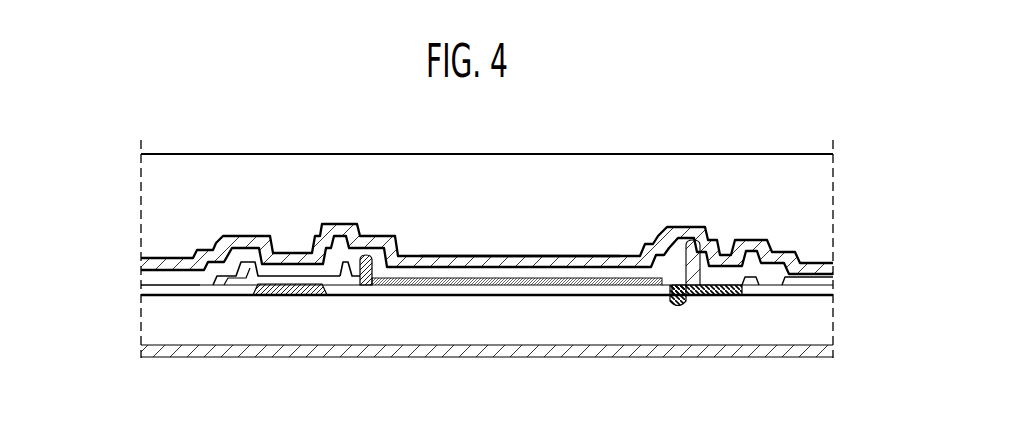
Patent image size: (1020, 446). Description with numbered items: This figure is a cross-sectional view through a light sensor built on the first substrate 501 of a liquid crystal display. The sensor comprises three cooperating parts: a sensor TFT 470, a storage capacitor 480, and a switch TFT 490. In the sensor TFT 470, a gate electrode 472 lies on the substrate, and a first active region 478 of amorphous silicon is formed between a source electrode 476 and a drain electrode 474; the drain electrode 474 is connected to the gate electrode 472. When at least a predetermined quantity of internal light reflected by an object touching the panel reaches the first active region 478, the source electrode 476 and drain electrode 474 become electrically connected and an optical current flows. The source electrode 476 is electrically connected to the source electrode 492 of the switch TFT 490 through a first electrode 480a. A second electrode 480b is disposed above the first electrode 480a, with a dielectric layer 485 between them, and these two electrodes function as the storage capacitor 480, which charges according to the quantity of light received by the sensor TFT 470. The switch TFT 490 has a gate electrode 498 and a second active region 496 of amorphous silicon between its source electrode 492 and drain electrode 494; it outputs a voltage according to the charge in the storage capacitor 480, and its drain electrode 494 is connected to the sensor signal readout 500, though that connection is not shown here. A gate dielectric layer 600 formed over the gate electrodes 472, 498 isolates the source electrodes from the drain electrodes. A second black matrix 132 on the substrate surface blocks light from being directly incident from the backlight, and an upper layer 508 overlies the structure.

The sensor signal readout 500 is at (150, 276).
The encapsulation layer 508 is at (826, 210).
The storage capacitor 480 is at (826, 268).
The first electrode 480a is at (503, 281).
The second electrode 480b is at (462, 260).
The dielectric layer 485 is at (552, 272).
The gate dielectric layer 600 is at (826, 290).
The first substrate 501 is at (826, 315).
The second black matrix 132 is at (826, 348).
The switch TFT 490 is at (292, 343).
The drain electrode 494 is at (202, 281).
The second active region 496 is at (228, 281).
The gate electrode 498 is at (283, 288).
The source electrode 492 is at (371, 325).
The sensor TFT 470 is at (732, 336).
The source electrode 476 is at (679, 300).
The gate electrode 472 is at (710, 293).
The first active region 478 is at (765, 280).
The drain electrode 474 is at (807, 336).